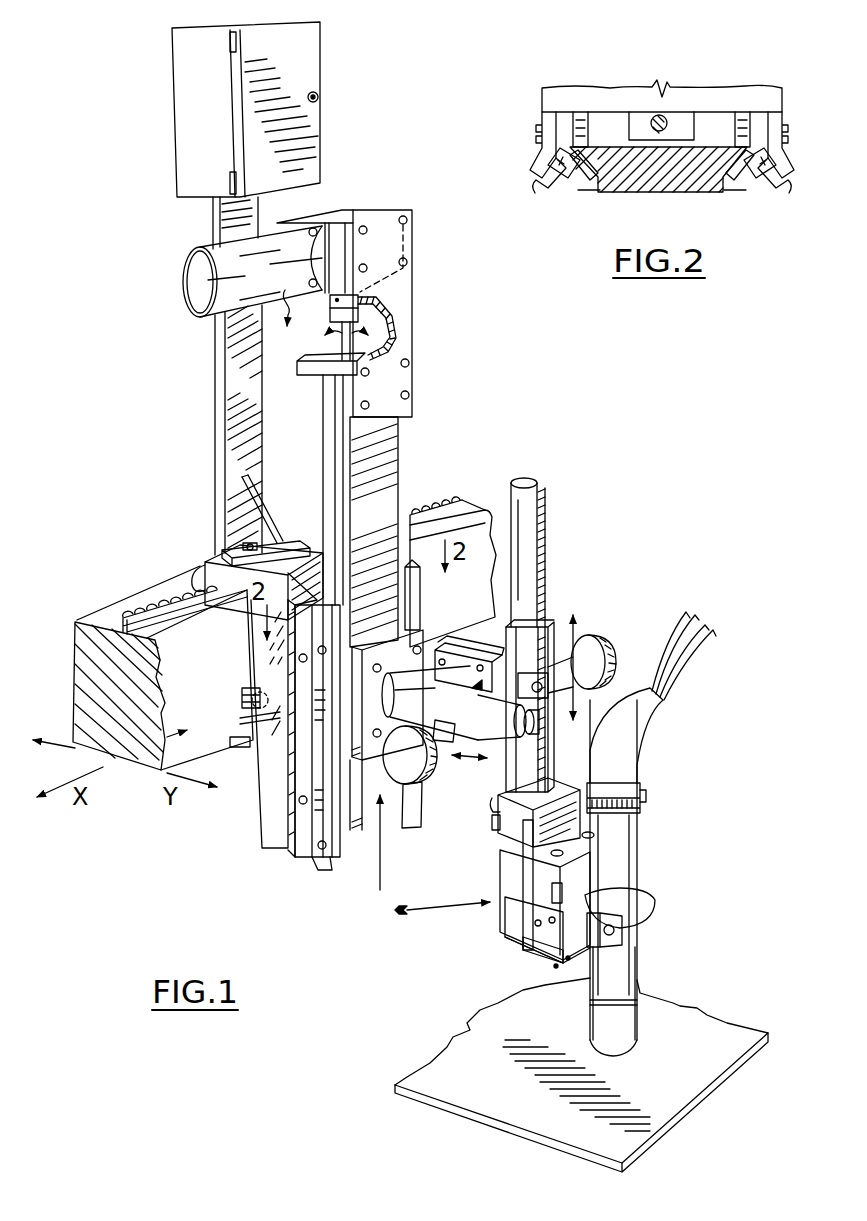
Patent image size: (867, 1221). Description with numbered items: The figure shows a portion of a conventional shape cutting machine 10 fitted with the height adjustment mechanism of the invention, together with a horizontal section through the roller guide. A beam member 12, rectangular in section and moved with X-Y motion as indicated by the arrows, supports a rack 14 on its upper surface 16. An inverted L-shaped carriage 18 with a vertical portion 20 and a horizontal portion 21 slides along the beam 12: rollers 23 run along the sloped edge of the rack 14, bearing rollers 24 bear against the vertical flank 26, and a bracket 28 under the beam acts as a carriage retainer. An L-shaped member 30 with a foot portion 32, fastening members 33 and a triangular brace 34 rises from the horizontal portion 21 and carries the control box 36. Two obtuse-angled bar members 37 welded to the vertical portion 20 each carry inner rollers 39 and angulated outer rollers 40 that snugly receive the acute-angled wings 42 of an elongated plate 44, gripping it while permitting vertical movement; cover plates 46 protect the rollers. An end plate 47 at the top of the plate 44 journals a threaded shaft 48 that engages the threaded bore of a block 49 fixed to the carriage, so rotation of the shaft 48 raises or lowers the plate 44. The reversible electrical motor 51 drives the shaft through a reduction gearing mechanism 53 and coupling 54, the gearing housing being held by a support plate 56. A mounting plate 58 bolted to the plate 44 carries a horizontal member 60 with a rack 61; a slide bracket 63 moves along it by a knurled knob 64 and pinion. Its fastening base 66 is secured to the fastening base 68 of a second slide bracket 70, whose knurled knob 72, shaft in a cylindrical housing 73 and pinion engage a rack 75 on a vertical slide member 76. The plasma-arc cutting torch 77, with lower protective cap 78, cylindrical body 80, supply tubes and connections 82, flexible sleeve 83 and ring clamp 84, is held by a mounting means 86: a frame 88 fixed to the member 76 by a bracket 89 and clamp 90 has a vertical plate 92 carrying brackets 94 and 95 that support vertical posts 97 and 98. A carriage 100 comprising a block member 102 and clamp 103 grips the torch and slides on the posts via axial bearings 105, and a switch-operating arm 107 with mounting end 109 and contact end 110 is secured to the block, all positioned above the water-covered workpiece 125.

In FIG. 1, the shape cutting machine 10 is at (167, 413).
In FIG. 1, the beam member 12 is at (472, 508).
In FIG. 1, the rack 14 is at (440, 500).
In FIG. 1, the upper surface 16 is at (100, 617).
In FIG. 1, the carriage 18 is at (262, 862).
In FIG. 2, the carriage 18 is at (613, 85).
In FIG. 1, the vertical portion 20 is at (268, 806).
In FIG. 1, the horizontal portion 21 is at (207, 560).
In FIG. 1, the rollers 23 is at (196, 577).
In FIG. 1, the bearing rollers 24 is at (240, 700).
In FIG. 1, the vertical flank 26 is at (493, 515).
In FIG. 1, the bracket 28 is at (252, 748).
In FIG. 1, the L-shaped member 30 is at (222, 332).
In FIG. 1, the foot portion 32 is at (292, 545).
In FIG. 1, the fastening members 33 is at (256, 540).
In FIG. 1, the triangular brace 34 is at (262, 510).
In FIG. 1, the control box 36 is at (183, 99).
In FIG. 2, the obtuse-angled bar members 37 is at (542, 115).
In FIG. 2, the inner rollers 39 is at (582, 112).
In FIG. 2, the outer rollers 40 is at (553, 180).
In FIG. 1, the acute-angled wings 42 is at (323, 405).
In FIG. 2, the acute-angled wings 42 is at (586, 185).
In FIG. 1, the elongated plate 44 is at (397, 425).
In FIG. 2, the elongated plate 44 is at (660, 192).
In FIG. 1, the cover plates 46 is at (405, 600).
In FIG. 2, the cover plates 46 is at (535, 183).
In FIG. 1, the end plate 47 is at (320, 356).
In FIG. 1, the shaft 48 is at (395, 342).
In FIG. 2, the shaft 48 is at (662, 115).
In FIG. 2, the block 49 is at (636, 110).
In FIG. 1, the electrical motor 51 is at (188, 284).
In FIG. 1, the reduction gearing mechanism 53 is at (337, 212).
In FIG. 1, the coupling 54 is at (358, 300).
In FIG. 1, the support plate 56 is at (412, 245).
In FIG. 1, the mounting plate 58 is at (395, 655).
In FIG. 1, the horizontal member 60 is at (485, 705).
In FIG. 1, the rack 61 is at (462, 750).
In FIG. 1, the slide bracket 63 is at (435, 709).
In FIG. 1, the knurled knob 64 is at (395, 757).
In FIG. 1, the fastening base 66 is at (447, 656).
In FIG. 1, the fastening base 68 is at (470, 645).
In FIG. 1, the slide bracket 70 is at (525, 627).
In FIG. 1, the knurled knob 72 is at (598, 646).
In FIG. 1, the cylindrical housing 73 is at (575, 690).
In FIG. 1, the rack 75 is at (545, 488).
In FIG. 1, the slide member 76 is at (530, 480).
In FIG. 1, the plasma-arc cutting torch 77 is at (640, 985).
In FIG. 1, the lower protective cap 78 is at (640, 1026).
In FIG. 1, the cylindrical body 80 is at (640, 842).
In FIG. 1, the supply tubes and connections 82 is at (700, 680).
In FIG. 1, the flexible sleeve 83 is at (645, 735).
In FIG. 1, the ring clamp 84 is at (650, 790).
In FIG. 1, the mounting means 86 is at (539, 885).
In FIG. 1, the frame 88 is at (577, 783).
In FIG. 1, the bracket 89 is at (500, 825).
In FIG. 1, the clamp 90 is at (495, 810).
In FIG. 1, the vertical plate 92 is at (505, 842).
In FIG. 1, the bracket 94 is at (620, 860).
In FIG. 1, the bracket 95 is at (556, 968).
In FIG. 1, the vertical post 97 is at (642, 912).
In FIG. 1, the vertical post 98 is at (622, 880).
In FIG. 1, the carriage 100 is at (568, 960).
In FIG. 1, the block member 102 is at (545, 955).
In FIG. 1, the clamp 103 is at (622, 945).
In FIG. 1, the axial bearings 105 is at (625, 930).
In FIG. 1, the switch-operating arm 107 is at (503, 905).
In FIG. 1, the mounting end 109 is at (530, 942).
In FIG. 1, the contact end 110 is at (515, 885).
In FIG. 1, the workpiece 125 is at (723, 1025).